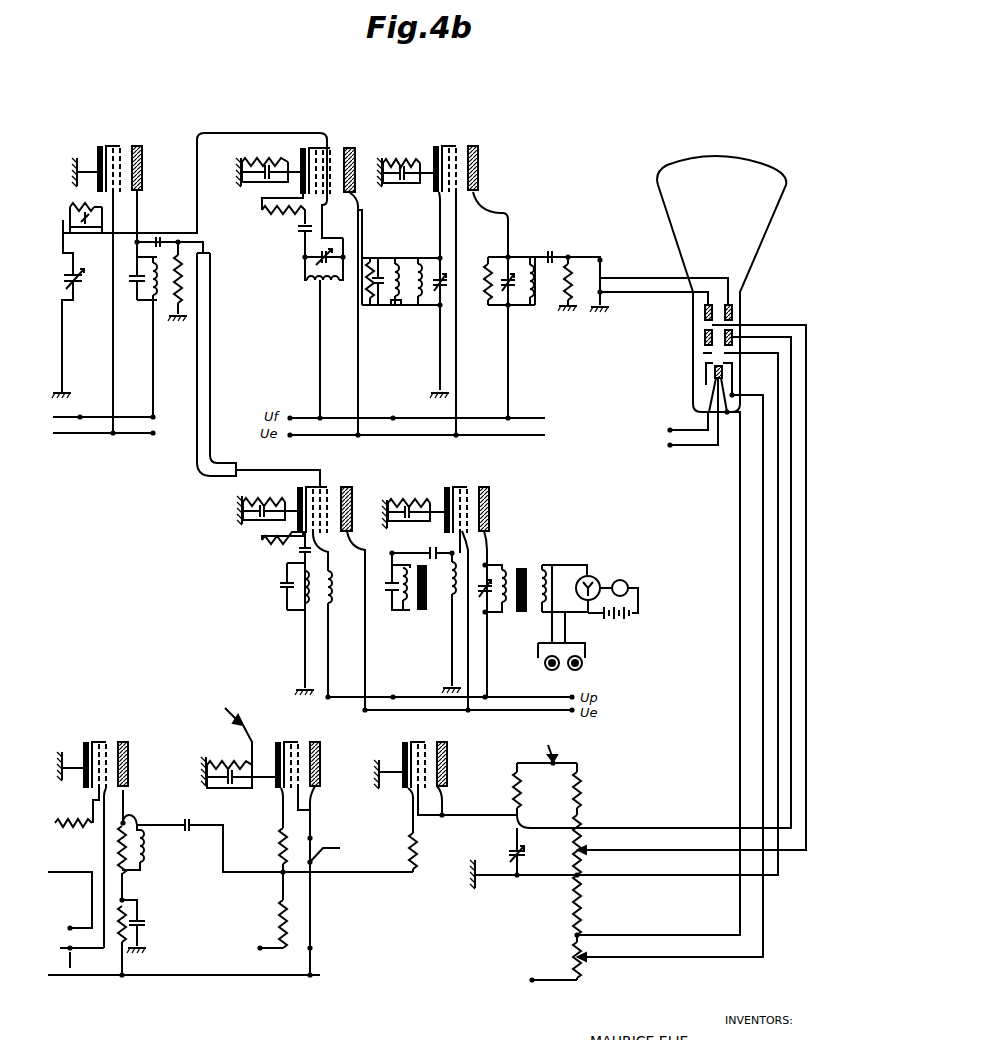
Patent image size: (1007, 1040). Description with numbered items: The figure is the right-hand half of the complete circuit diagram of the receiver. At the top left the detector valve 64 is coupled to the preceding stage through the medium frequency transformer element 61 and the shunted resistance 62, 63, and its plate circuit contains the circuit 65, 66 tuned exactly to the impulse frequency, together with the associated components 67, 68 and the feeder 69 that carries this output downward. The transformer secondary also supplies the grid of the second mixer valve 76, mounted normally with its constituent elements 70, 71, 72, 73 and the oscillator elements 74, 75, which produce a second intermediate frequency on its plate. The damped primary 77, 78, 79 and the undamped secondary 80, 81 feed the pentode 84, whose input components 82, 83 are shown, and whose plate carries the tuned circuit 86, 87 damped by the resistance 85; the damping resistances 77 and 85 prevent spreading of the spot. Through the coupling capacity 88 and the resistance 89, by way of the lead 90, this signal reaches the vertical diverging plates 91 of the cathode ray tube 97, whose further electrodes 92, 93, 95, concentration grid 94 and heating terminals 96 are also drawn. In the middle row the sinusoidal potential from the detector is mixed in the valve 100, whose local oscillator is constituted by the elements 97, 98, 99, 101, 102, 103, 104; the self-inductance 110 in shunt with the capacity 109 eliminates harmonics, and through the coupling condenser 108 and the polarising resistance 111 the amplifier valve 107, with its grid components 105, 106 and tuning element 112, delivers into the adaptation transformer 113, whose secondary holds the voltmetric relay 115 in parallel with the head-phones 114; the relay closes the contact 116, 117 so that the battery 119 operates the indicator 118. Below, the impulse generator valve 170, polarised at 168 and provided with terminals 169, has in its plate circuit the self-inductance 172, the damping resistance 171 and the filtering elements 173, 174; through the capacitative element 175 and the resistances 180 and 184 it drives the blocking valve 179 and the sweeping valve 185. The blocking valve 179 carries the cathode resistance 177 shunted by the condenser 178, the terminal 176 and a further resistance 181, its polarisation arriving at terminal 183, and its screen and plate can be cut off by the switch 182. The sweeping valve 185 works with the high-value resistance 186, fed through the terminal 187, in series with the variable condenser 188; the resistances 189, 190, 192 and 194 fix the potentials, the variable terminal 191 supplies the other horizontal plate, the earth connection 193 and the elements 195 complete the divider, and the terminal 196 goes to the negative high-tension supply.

The medium frequency transformer element 61 is at (77, 284).
The shunted resistance 62 is at (87, 225).
The shunted resistance 63 is at (80, 207).
The detector valve 64 is at (113, 146).
The tuned circuit element (self-inductance and condenser) 65 is at (138, 300).
The tuned circuit element (self-inductance and condenser) 66 is at (146, 302).
The capacitor 67 is at (159, 236).
The choke coil 68 is at (182, 262).
The coaxial line 69 is at (212, 283).
The mixer valve constituent element 70 is at (266, 162).
The mixer valve constituent element 71 is at (263, 178).
The mixer valve constituent element 72 is at (278, 213).
The mixer valve constituent element 73 is at (303, 233).
The oscillator element 74 is at (317, 258).
The oscillator element 75 is at (312, 283).
The second mixer valve 76 is at (333, 150).
The damping resistance 77 is at (365, 313).
The damped primary element 78 is at (381, 272).
The damped primary element 79 is at (420, 262).
The undamped secondary element 80 is at (401, 307).
The undamped secondary element 81 is at (447, 270).
The resistor 82 is at (406, 163).
The capacitor 83 is at (403, 181).
The pentode amplifier valve 84 is at (452, 147).
The damping resistance 85 is at (489, 302).
The tuned circuit element 86 is at (512, 287).
The tuned circuit element 87 is at (531, 265).
The coupling capacity 88 is at (553, 251).
The resistance 89 is at (566, 302).
The lead 90 is at (605, 277).
The vertical diverging plates 91 is at (733, 313).
The electrode 92 is at (705, 336).
The deflection plates 93 is at (702, 356).
The concentration grid 94 is at (705, 380).
The electrode 95 is at (723, 372).
The heating terminals 96 is at (670, 445).
The cathode ray tube 97 is at (721, 268).
The local oscillator element 98 is at (244, 515).
The local oscillator element 99 is at (266, 541).
The mixer valve 100 is at (326, 491).
The local oscillator element 101 is at (300, 552).
The local oscillator element 102 is at (283, 587).
The local oscillator element 103 is at (287, 608).
The local oscillator element 104 is at (332, 577).
The resistor 105 is at (410, 503).
The capacitor 106 is at (410, 521).
The amplifier valve 107 is at (456, 487).
The coupling condenser 108 is at (428, 552).
The capacity 109 is at (388, 592).
The self-inductance 110 is at (418, 602).
The polarising resistance 111 is at (450, 603).
The variable capacitor 112 is at (490, 580).
The adaptation transformer 113 is at (506, 570).
The head-phones 114 is at (545, 665).
The voltmetric relay 115 is at (565, 577).
The contact 116 is at (597, 580).
The contact 117 is at (624, 580).
The luminous or sonorous indicator 118 is at (629, 585).
The battery 119 is at (626, 617).
The polarisation point 168 is at (75, 807).
The terminals 169 is at (70, 928).
The impulse generator valve 170 is at (93, 742).
The damping resistance 171 is at (128, 821).
The self-inductance 172 is at (146, 849).
The resistance element 173 is at (127, 907).
The condenser element 174 is at (146, 922).
The capacitative element 175 is at (187, 818).
The terminal 176 is at (252, 730).
The blocking resistance 177 is at (229, 765).
The condenser 178 is at (234, 786).
The blocking valve 179 is at (291, 742).
The resistance 180 is at (279, 846).
The resistor 181 is at (280, 912).
The switch 182 is at (338, 852).
The terminal 183 is at (260, 948).
The resistance 184 is at (410, 846).
The sweeping valve 185 is at (413, 742).
The resistance of high value 186 is at (514, 785).
The terminal 187 is at (547, 750).
The variable condenser 188 is at (512, 850).
The resistance 189 is at (580, 782).
The potentiometer resistance 190 is at (583, 837).
The variable terminal 191 is at (586, 848).
The fixed resistance 192 is at (582, 909).
The ground lead 193 is at (520, 877).
The potentiometer resistance 194 is at (575, 936).
The resistor 195 is at (584, 955).
The terminal 196 is at (532, 979).